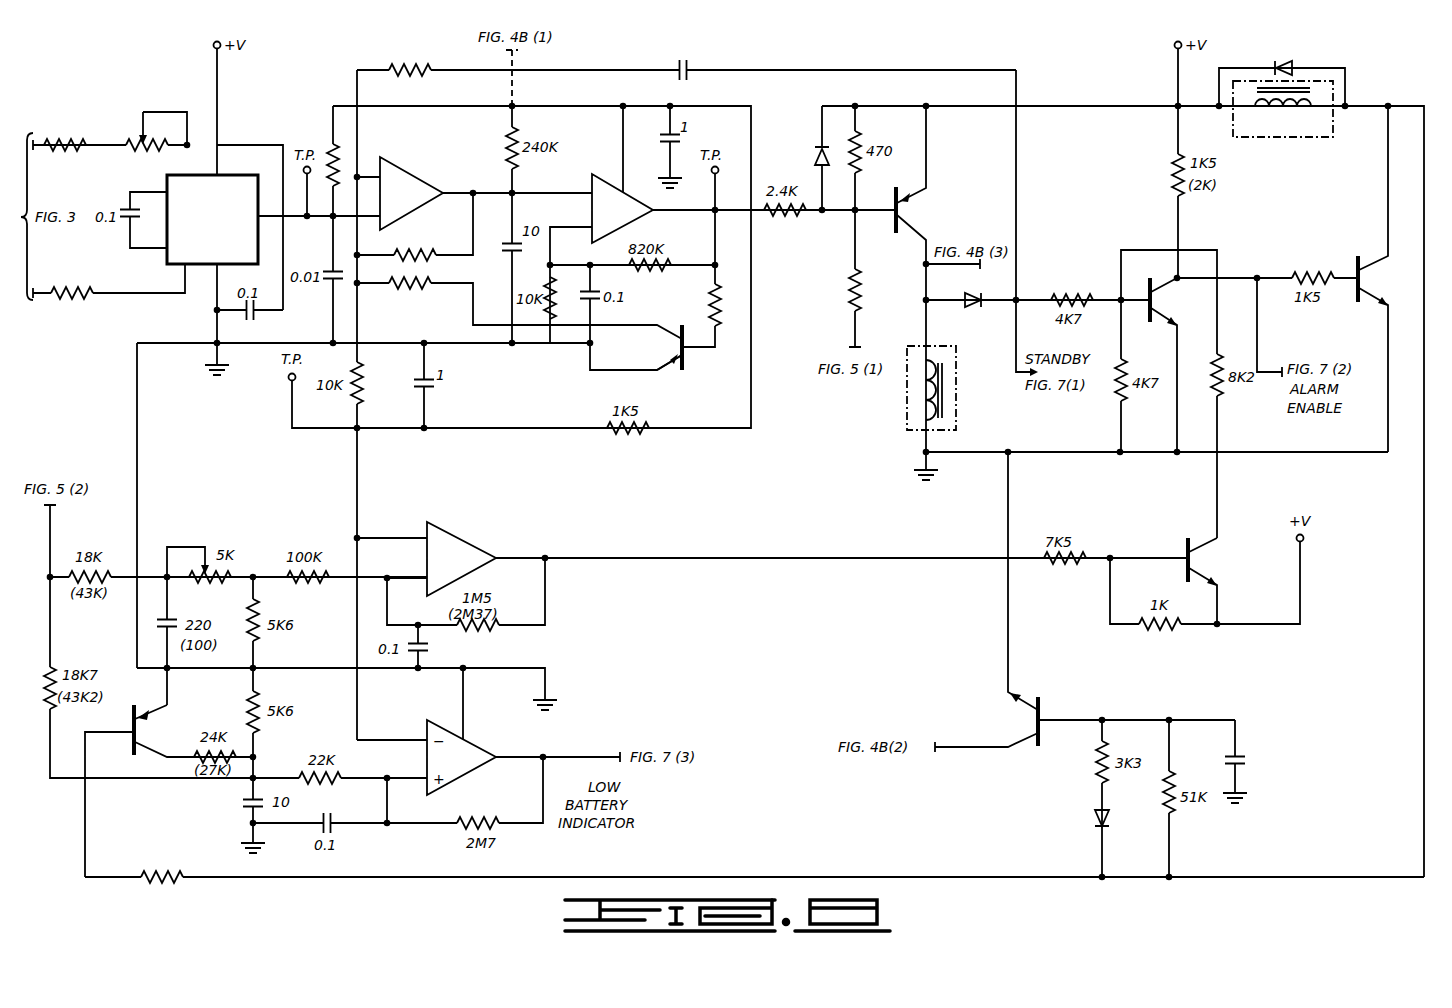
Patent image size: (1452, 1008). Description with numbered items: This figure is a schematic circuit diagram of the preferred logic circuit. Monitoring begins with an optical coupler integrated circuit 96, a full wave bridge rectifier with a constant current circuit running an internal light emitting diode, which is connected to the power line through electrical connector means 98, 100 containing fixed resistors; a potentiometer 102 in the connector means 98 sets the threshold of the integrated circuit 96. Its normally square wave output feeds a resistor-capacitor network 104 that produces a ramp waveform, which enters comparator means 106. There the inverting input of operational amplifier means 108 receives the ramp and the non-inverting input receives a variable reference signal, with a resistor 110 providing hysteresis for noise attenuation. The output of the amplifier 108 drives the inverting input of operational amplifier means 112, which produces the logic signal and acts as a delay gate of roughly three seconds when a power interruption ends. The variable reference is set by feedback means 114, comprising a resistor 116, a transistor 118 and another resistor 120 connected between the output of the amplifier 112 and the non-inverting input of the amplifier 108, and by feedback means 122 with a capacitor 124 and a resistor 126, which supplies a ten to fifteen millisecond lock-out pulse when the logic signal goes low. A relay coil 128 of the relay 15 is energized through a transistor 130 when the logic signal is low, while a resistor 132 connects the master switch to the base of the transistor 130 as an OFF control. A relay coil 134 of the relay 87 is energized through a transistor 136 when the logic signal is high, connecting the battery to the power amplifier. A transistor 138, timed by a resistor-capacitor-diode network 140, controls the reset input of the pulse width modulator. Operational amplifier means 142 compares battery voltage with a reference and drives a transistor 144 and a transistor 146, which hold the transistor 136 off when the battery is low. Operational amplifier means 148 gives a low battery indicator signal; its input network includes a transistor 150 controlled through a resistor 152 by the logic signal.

The relay 15 is at (905, 428).
The relay 87 is at (1296, 138).
The optical coupler integrated circuit 96 is at (240, 174).
The electrical connector means 98 is at (35, 146).
The electrical connector means 100 is at (143, 292).
The potentiometer 102 is at (143, 118).
The resistor-capacitor network 104 is at (326, 113).
The comparator means 106 is at (756, 109).
The operational amplifier means 108 is at (432, 166).
The resistor 110 is at (445, 252).
The operational amplifier means 112 is at (603, 172).
The feedback means 114 is at (678, 378).
The resistor 116 is at (717, 293).
The transistor 118 is at (688, 360).
The resistor 120 is at (432, 283).
The feedback means 122 is at (960, 66).
The capacitor 124 is at (690, 64).
The resistor 126 is at (404, 78).
The relay coil 128 is at (928, 392).
The transistor 130 is at (905, 212).
The resistor 132 is at (850, 293).
The relay coil 134 is at (1285, 108).
The transistor 136 is at (1352, 264).
The transistor 138 is at (1044, 738).
The resistor-capacitor-diode network 140 is at (1250, 721).
The operational amplifier means 142 is at (491, 534).
The transistor 144 is at (1185, 547).
The transistor 146 is at (1140, 293).
The operational amplifier means 148 is at (562, 704).
The transistor 150 is at (134, 738).
The resistor 152 is at (156, 880).